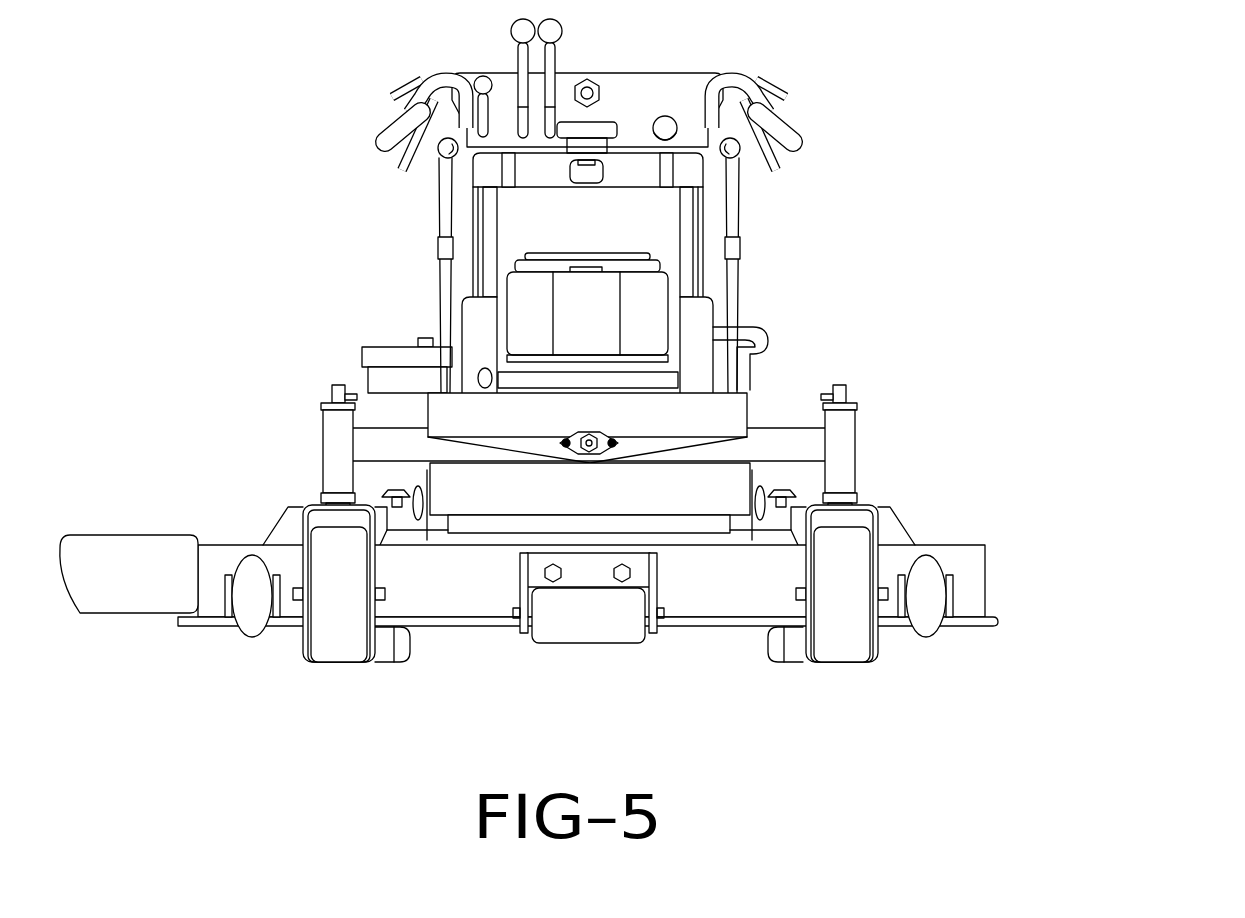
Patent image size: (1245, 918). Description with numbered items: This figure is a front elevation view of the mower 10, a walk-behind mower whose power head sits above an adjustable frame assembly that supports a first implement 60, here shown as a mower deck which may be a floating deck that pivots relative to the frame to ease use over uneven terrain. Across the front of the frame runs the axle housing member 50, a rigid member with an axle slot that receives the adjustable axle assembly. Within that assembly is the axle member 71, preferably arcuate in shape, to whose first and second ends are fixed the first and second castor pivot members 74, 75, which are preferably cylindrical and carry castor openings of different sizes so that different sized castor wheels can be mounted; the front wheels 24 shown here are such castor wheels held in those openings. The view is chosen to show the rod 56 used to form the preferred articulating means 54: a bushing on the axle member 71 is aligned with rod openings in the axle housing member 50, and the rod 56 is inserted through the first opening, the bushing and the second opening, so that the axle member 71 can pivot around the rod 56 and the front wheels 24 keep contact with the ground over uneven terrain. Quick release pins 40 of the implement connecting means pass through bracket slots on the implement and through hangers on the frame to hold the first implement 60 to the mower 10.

The mower 10 is at (1063, 168).
The front wheels 24 is at (853, 643).
The quick release pins 40 is at (763, 491).
The axle housing member 50 is at (472, 407).
The articulating means 54 is at (862, 360).
The rod 56 is at (596, 440).
The first implement 60 is at (973, 556).
The axle member 71 is at (377, 442).
The first castor pivot member 74 is at (323, 410).
The second castor pivot member 75 is at (850, 422).